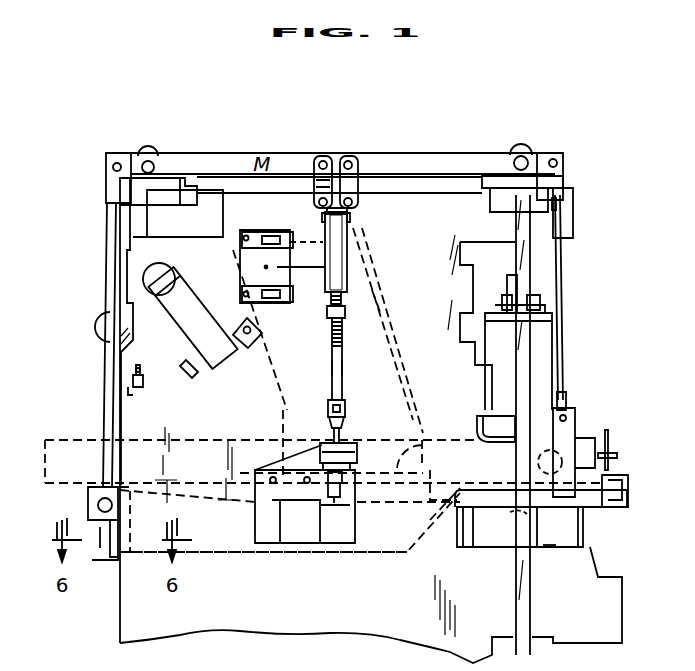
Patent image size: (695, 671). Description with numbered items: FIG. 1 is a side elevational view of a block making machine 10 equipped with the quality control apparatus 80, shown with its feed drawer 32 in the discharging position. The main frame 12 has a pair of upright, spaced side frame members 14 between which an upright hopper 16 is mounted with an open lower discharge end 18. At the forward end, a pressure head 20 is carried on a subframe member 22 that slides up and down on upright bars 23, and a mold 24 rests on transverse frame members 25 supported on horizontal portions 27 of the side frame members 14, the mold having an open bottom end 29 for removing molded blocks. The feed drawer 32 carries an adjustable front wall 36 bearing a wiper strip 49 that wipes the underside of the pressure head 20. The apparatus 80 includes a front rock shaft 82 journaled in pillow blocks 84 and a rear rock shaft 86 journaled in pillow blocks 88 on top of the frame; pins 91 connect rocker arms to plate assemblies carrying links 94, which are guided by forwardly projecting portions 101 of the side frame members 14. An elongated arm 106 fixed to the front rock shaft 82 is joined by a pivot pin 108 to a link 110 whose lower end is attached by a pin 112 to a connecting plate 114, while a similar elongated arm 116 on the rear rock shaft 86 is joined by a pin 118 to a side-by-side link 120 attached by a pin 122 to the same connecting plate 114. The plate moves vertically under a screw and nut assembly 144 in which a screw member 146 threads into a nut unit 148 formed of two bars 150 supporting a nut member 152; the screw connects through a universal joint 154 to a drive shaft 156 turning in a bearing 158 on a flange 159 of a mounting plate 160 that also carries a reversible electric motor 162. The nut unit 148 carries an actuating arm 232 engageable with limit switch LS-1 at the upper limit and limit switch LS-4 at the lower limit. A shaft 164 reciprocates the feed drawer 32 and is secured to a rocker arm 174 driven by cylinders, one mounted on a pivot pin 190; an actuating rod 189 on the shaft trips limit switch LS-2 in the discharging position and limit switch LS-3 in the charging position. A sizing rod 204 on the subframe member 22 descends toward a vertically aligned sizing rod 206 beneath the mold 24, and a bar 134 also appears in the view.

The pillow blocks 88 is at (142, 156).
The rear rock shaft 86 is at (158, 161).
The elongated arm 116 is at (222, 160).
The pin 118 is at (326, 160).
The pivot pin 108 is at (351, 160).
The elongated arm 106 is at (428, 160).
The pillow blocks 84 is at (520, 152).
The front rock shaft 82 is at (530, 157).
The pins 91 is at (560, 162).
The link 120 is at (325, 183).
The link 110 is at (356, 184).
The pin 122 is at (319, 202).
The pin 112 is at (353, 202).
The connecting plate 114 is at (350, 215).
The nut unit 148 is at (350, 250).
The subframe member 22 is at (510, 283).
The link 94 is at (563, 285).
The nut member 152 is at (345, 300).
The hopper 16 is at (380, 306).
The actuating arm 232 is at (301, 281).
The bars 150 is at (330, 300).
The pressure head 20 is at (545, 358).
The screw and nut assembly 144 is at (346, 316).
The shaft 164 is at (173, 272).
The rocker arm 174 is at (107, 318).
The pivot pin 190 is at (187, 322).
The screw member 146 is at (333, 348).
The quality control apparatus 80 is at (352, 368).
The bar 134 is at (105, 386).
The actuating rod 189 is at (196, 372).
The limit switch LS-1 is at (262, 312).
The limit switch LS-2 is at (256, 350).
The limit switch LS-3 is at (151, 386).
The limit switch LS-4 is at (277, 232).
The universal joint 154 is at (345, 410).
The drive shaft 156 is at (343, 431).
The bearing 158 is at (357, 447).
The feed drawer 32 is at (583, 430).
The wiper strip 49 is at (612, 437).
The lower discharge end 18 is at (424, 447).
The forwardly projecting portions 101 is at (496, 438).
The sizing rod 204 is at (538, 462).
The front wall 36 is at (630, 486).
The flange 159 is at (350, 468).
The mounting plate 160 is at (345, 497).
The sizing rod 206 is at (502, 524).
The mold 24 is at (578, 523).
The transverse frame members 25 is at (583, 535).
The bottom end 29 is at (497, 550).
The horizontal portions 27 is at (549, 547).
The reversible electric motor 162 is at (300, 545).
The upright bars 23 is at (532, 616).
The main frame 12 is at (118, 607).
The block making machine 10 is at (116, 636).
The side frame members 14 is at (289, 619).